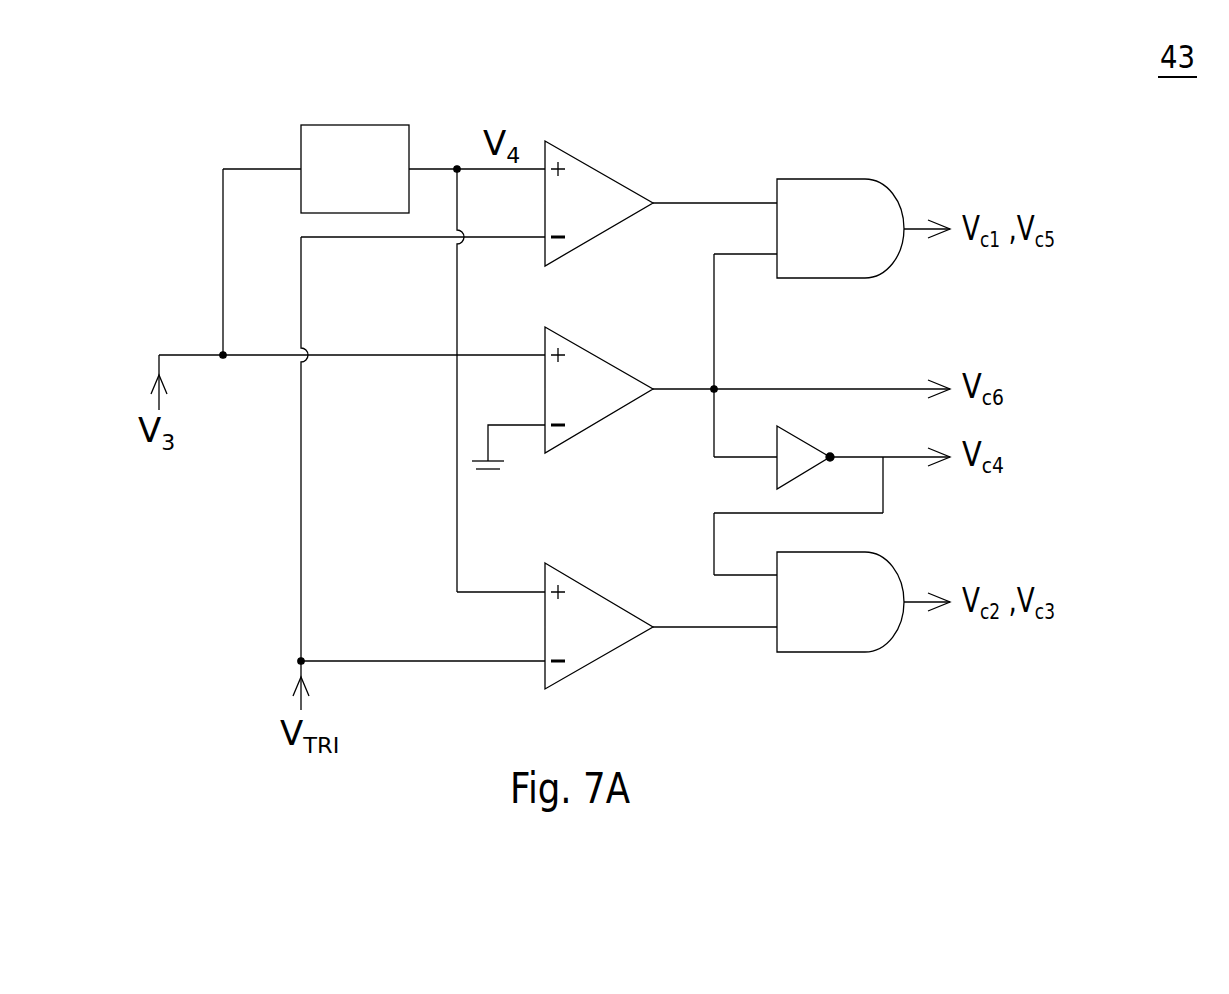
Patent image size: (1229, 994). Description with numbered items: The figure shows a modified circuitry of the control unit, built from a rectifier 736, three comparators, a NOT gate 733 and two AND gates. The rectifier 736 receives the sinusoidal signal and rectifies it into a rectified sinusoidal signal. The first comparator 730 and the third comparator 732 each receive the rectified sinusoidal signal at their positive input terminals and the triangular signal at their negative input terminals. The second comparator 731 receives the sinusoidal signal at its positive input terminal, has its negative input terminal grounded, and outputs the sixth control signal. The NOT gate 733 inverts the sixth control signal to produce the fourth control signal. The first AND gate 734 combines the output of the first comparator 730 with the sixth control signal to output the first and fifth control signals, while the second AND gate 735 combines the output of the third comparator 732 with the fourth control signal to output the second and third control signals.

The first comparator 730 is at (601, 173).
The second comparator 731 is at (601, 359).
The third comparator 732 is at (601, 596).
The NOT gate 733 is at (805, 441).
The first AND gate 734 is at (820, 179).
The second AND gate 735 is at (862, 552).
The rectifier 736 is at (388, 125).